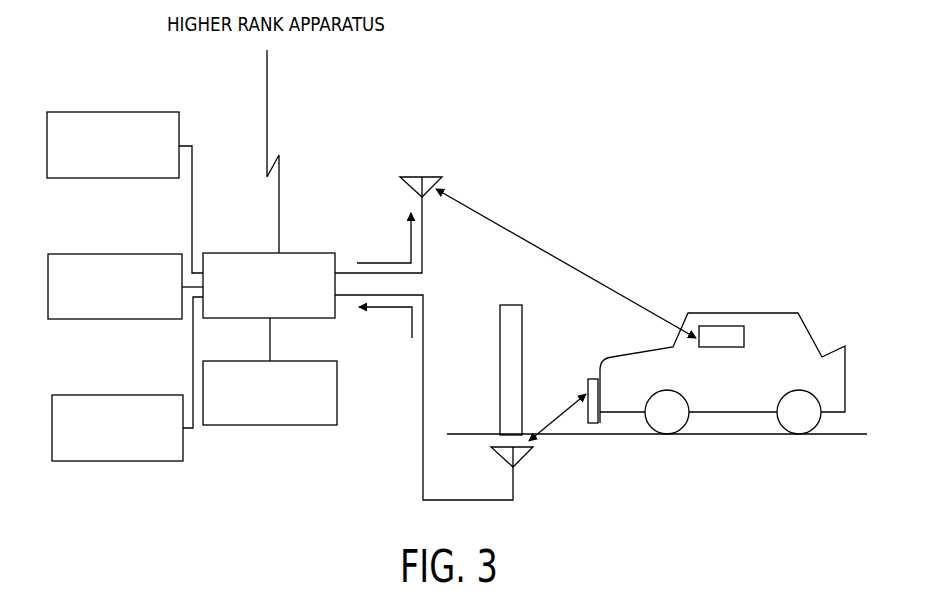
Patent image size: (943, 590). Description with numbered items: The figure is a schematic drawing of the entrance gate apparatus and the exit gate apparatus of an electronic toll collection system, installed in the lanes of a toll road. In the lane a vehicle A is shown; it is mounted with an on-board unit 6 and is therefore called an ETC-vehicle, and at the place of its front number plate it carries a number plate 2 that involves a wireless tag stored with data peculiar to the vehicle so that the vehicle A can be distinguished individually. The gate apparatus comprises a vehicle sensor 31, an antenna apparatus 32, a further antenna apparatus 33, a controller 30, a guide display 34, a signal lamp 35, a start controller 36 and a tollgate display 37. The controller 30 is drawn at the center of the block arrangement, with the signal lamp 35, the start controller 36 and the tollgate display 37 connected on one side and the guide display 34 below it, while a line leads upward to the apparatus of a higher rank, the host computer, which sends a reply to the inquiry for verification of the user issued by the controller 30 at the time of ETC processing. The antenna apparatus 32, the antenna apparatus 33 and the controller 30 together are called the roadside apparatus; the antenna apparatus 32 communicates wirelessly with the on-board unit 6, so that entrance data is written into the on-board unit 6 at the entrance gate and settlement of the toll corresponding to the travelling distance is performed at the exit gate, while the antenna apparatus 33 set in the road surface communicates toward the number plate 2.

The signal lamp 35 is at (78, 112).
The start controller 36 is at (73, 254).
The controller 30 is at (248, 253).
The guide display 34 is at (272, 425).
The tollgate display 37 is at (82, 395).
The antenna apparatus 32 is at (410, 177).
The vehicle sensor 31 is at (500, 317).
The antenna apparatus 33 is at (523, 457).
The number plate 2 is at (598, 425).
The on-board unit 6 is at (718, 326).
The vehicle A is at (787, 313).